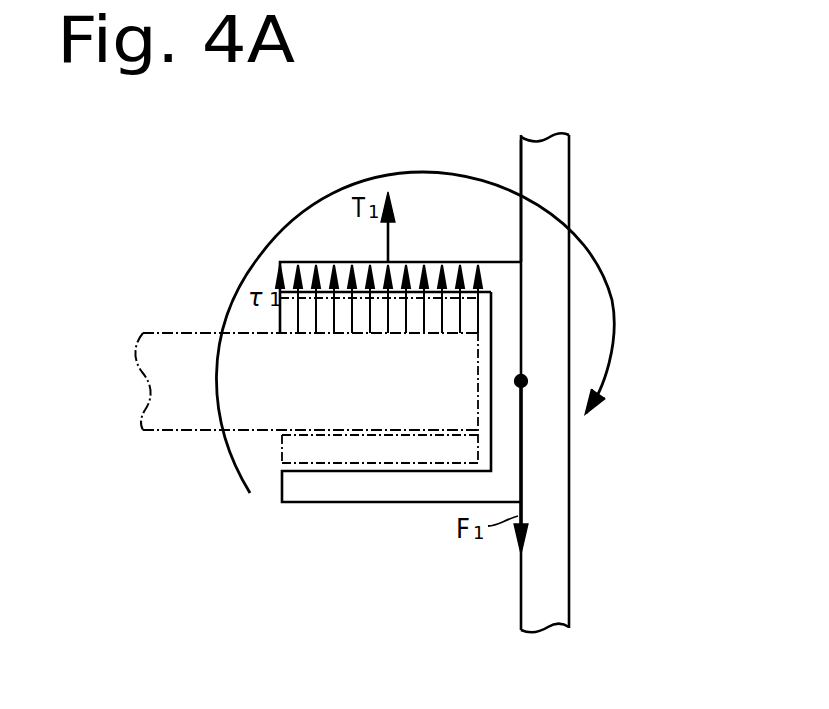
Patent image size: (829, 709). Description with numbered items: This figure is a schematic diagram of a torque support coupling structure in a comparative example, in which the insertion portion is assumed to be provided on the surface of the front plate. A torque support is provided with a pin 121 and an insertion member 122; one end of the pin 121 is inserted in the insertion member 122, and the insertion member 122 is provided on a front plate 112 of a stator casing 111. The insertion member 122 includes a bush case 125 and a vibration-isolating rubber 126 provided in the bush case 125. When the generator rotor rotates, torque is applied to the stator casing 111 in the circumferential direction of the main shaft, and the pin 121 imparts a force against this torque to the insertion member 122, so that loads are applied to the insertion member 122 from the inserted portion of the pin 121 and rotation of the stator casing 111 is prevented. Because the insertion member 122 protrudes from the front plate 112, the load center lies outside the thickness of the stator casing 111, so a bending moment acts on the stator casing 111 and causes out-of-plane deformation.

The stator casing 111 is at (562, 192).
The front plate 112 is at (520, 162).
The pin 121 is at (210, 432).
The insertion member 122 is at (270, 548).
The bush case 125 is at (392, 495).
The vibration-isolating rubber 126 is at (367, 457).